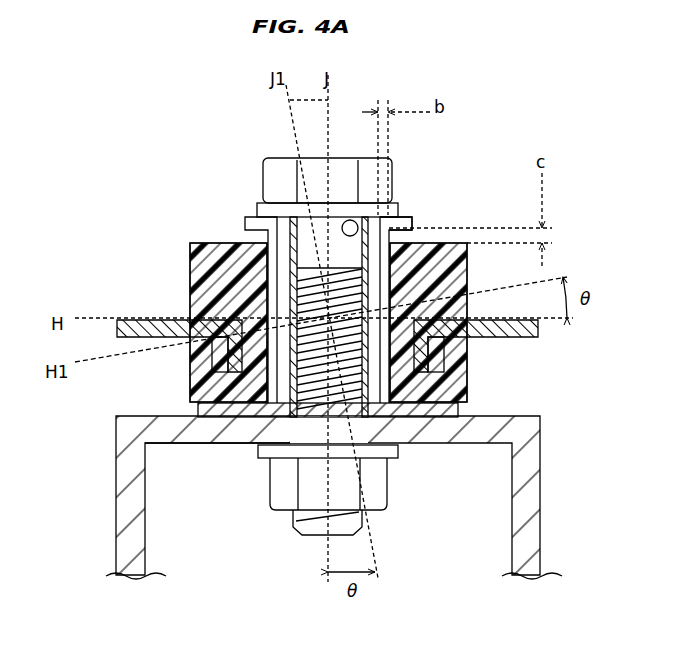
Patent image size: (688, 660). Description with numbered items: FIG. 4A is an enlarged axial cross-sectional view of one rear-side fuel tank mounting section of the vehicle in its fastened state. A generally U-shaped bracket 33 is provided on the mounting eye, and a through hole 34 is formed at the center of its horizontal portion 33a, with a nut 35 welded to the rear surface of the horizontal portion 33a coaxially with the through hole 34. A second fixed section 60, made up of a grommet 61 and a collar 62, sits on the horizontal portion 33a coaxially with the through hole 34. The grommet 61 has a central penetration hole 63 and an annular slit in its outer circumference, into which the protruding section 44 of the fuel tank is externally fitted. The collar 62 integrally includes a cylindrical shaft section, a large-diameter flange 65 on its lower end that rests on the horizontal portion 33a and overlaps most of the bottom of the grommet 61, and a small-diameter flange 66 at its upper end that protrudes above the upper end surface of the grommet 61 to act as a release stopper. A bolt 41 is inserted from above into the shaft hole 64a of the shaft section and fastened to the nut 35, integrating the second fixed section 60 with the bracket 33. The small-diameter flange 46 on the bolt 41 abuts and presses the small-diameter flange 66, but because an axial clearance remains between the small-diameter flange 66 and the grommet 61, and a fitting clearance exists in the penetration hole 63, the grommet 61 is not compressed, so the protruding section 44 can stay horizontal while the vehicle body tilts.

The bracket 33 is at (530, 512).
The horizontal portion 33a is at (165, 445).
The through hole 34 is at (300, 482).
The nut 35 is at (388, 500).
The bolt 41 is at (277, 158).
The protruding section 44 is at (145, 345).
The small-diameter flange 46 is at (396, 203).
The second fixed section 60 is at (210, 238).
The grommet 61 is at (190, 244).
The collar 62 is at (190, 298).
The penetration hole 63 is at (278, 224).
The shaft hole 64a is at (352, 220).
The large-diameter flange 65 is at (458, 412).
The small-diameter flange 66 is at (412, 222).